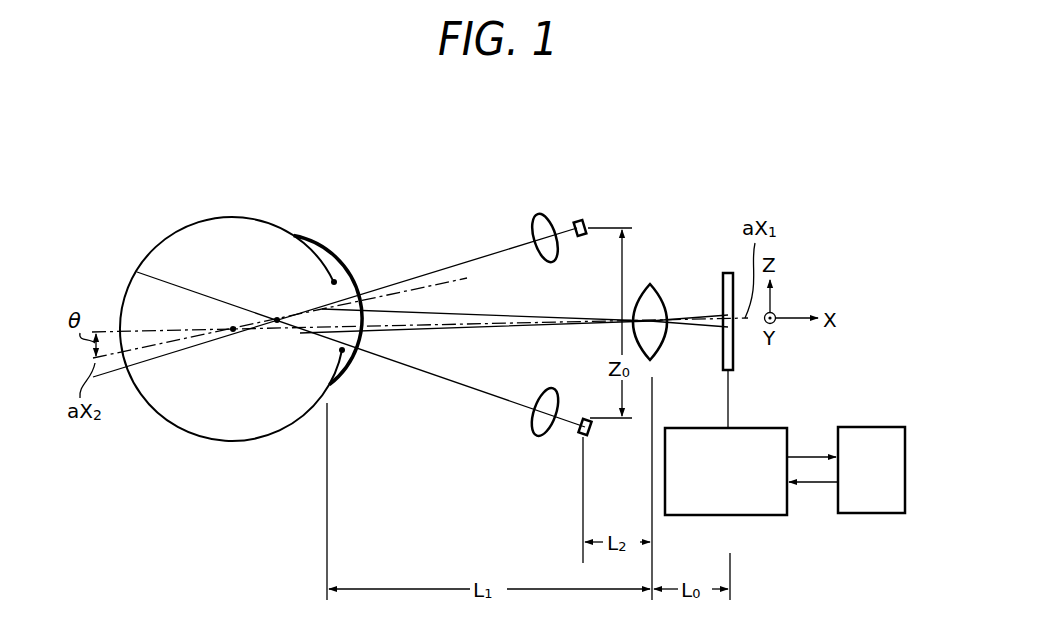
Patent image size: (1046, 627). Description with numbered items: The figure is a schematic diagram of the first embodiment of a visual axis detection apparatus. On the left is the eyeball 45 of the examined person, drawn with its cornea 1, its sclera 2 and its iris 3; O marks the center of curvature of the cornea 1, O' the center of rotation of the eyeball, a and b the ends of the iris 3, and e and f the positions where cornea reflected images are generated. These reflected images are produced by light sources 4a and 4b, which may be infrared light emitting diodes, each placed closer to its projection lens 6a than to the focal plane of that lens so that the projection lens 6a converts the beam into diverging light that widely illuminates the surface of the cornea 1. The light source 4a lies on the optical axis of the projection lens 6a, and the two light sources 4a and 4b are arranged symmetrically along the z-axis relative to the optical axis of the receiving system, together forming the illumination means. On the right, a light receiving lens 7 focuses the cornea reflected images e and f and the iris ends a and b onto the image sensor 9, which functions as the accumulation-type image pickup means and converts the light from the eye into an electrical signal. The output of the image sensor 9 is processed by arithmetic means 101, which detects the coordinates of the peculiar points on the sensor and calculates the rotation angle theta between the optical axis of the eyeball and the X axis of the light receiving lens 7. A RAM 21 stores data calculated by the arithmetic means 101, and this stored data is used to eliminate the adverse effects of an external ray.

The cornea 1 is at (343, 258).
The sclera 2 is at (248, 218).
The iris 3 is at (327, 257).
The eyeball 45 is at (193, 220).
The light source 4a is at (577, 220).
The light source 4b is at (578, 436).
The projection lens 6a is at (535, 217).
The light receiving lens 7 is at (648, 284).
The image sensor 9 is at (728, 273).
The arithmetic means 101 is at (745, 428).
The RAM 21 is at (860, 427).